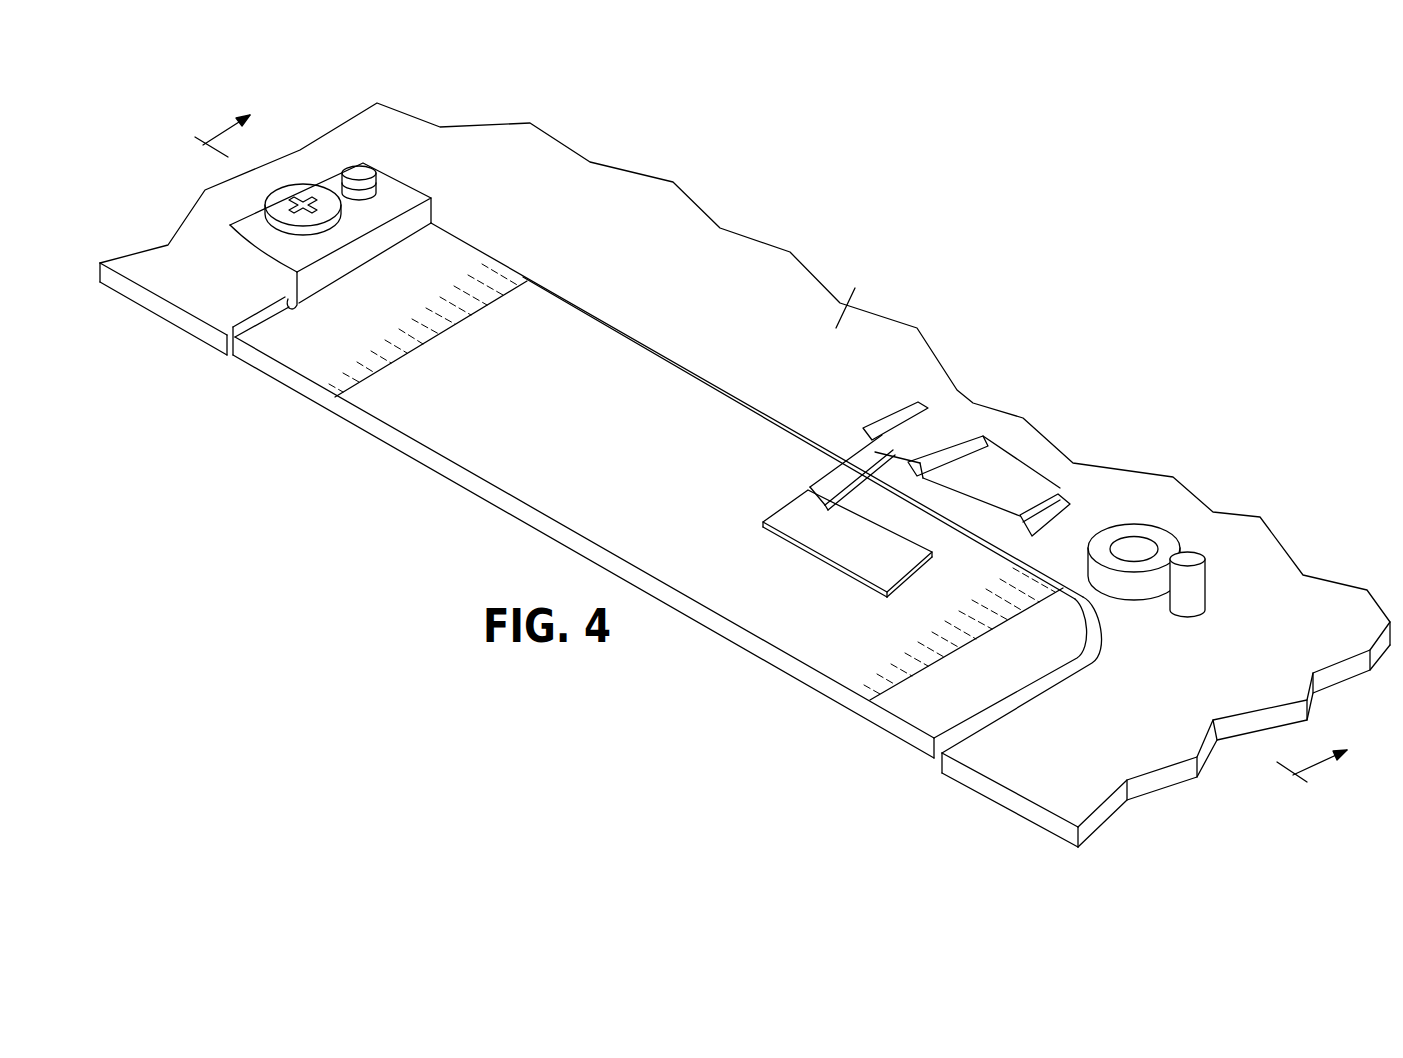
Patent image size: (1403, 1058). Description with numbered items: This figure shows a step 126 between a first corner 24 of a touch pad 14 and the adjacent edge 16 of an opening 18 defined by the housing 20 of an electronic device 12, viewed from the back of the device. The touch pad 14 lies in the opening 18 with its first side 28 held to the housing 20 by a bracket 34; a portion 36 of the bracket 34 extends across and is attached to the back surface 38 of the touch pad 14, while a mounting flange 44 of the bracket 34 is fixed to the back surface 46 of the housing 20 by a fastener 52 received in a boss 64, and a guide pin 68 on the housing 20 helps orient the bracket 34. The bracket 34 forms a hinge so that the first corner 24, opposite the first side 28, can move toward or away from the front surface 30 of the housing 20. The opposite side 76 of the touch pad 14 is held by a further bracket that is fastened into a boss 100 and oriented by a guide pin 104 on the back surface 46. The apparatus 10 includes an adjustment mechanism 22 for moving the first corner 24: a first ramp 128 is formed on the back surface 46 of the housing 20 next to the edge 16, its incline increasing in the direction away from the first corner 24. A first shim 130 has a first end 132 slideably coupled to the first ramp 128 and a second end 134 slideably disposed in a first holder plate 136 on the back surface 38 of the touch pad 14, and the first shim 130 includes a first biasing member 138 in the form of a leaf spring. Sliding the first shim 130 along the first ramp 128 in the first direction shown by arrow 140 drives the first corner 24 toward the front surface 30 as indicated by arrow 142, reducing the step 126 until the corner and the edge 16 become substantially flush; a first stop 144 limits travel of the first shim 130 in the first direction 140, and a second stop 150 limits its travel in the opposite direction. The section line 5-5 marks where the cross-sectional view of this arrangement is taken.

The line 5- 5 is at (763, 459).
The apparatus 10 is at (990, 423).
The electronic device 12 is at (757, 241).
The touch pad 14 is at (680, 403).
The edge 16 is at (602, 322).
The opening 18 is at (743, 400).
The housing 20 is at (1330, 598).
The adjustment mechanism 22 is at (1057, 471).
The first corner 24 is at (1078, 635).
The first side 28 is at (231, 355).
The front surface 30 is at (1012, 812).
The bracket 34 is at (433, 343).
The portion 36 is at (466, 266).
The back surface 38 is at (607, 461).
The mounting flange 44 is at (420, 187).
The back surface 46 is at (851, 293).
The fastener 52 is at (270, 190).
The boss 64 is at (268, 257).
The guide pin 68 is at (366, 160).
The tongue end edge 76 is at (1033, 688).
The boss 100 is at (1172, 535).
The guide pin 104 is at (1208, 589).
The step 126 is at (1103, 621).
The first ramp 128 is at (936, 474).
The first shim 130 is at (862, 453).
The first end 132 is at (947, 426).
The second end 134 is at (805, 500).
The first holder plate 136 is at (832, 572).
The first biasing member 138 is at (843, 478).
The arrow 140 is at (990, 490).
The arrow 142 is at (905, 762).
The first stop 144 is at (1062, 495).
The second stop 150 is at (888, 428).